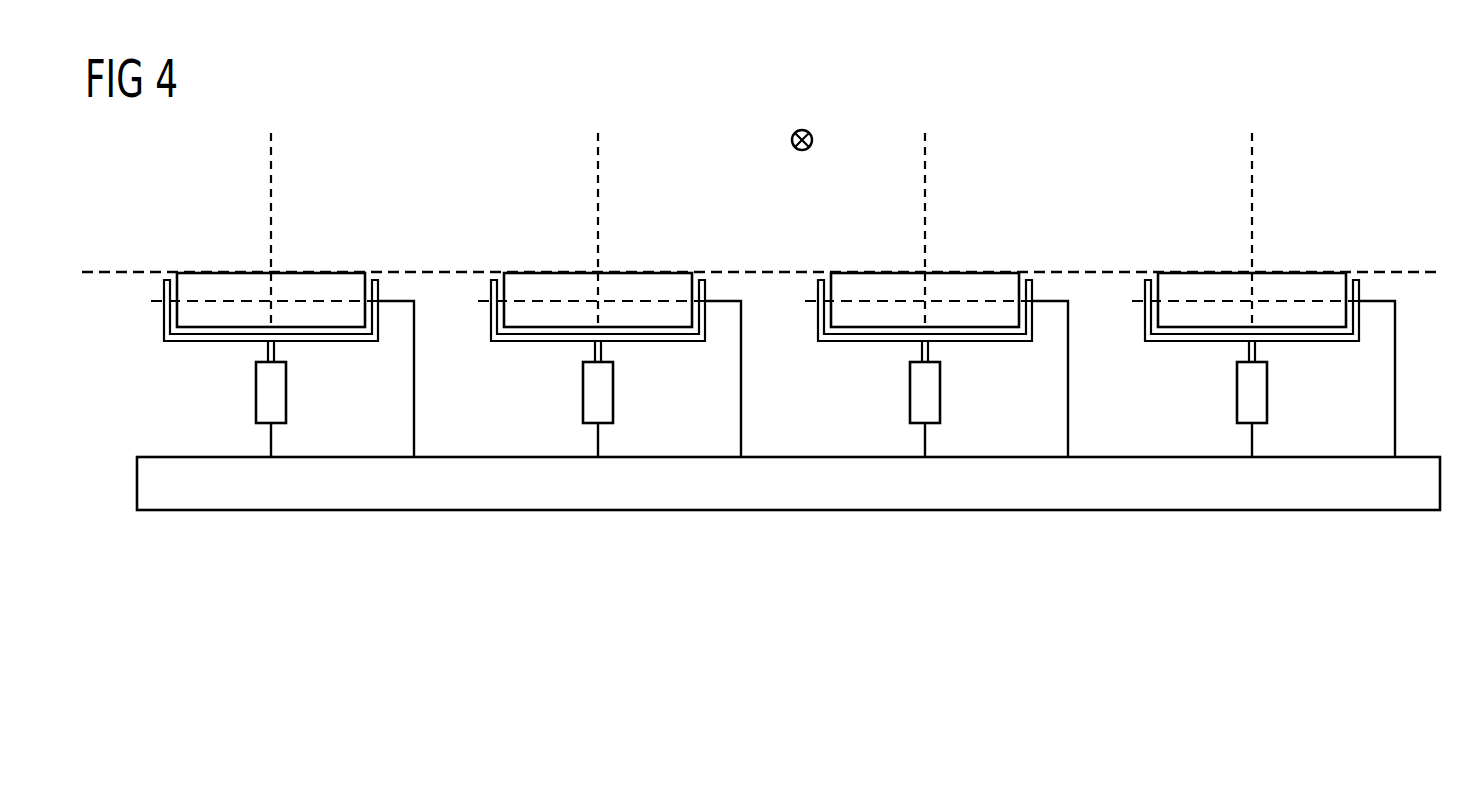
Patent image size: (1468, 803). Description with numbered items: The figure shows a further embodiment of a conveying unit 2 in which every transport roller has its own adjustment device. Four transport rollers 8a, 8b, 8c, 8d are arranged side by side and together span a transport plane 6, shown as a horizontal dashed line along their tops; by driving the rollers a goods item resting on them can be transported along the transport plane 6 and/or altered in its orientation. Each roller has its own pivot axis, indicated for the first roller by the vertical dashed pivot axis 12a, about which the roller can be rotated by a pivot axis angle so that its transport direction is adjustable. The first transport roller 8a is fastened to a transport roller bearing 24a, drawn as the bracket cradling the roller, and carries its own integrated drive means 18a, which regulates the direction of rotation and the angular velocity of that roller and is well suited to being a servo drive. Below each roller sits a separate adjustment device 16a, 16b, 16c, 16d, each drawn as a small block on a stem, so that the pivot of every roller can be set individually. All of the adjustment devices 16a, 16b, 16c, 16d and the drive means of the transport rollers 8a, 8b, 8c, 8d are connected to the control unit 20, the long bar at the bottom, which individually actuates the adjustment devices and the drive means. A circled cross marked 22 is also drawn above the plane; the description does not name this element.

The conveying unit 2 is at (1380, 162).
The transport plane 6 is at (482, 271).
The transport roller 8a is at (319, 272).
The transport roller 8b is at (652, 272).
The transport roller 8c is at (980, 272).
The transport roller 8d is at (1307, 272).
The pivot axis 12a is at (272, 150).
The adjustment device 16a is at (256, 390).
The adjustment device 16b is at (583, 390).
The adjustment device 16c is at (910, 390).
The adjustment device 16d is at (1237, 390).
The drive means 18a is at (212, 283).
The control unit 20 is at (1338, 456).
The direction symbol 22 is at (802, 129).
The transport roller bearing 24a is at (378, 288).